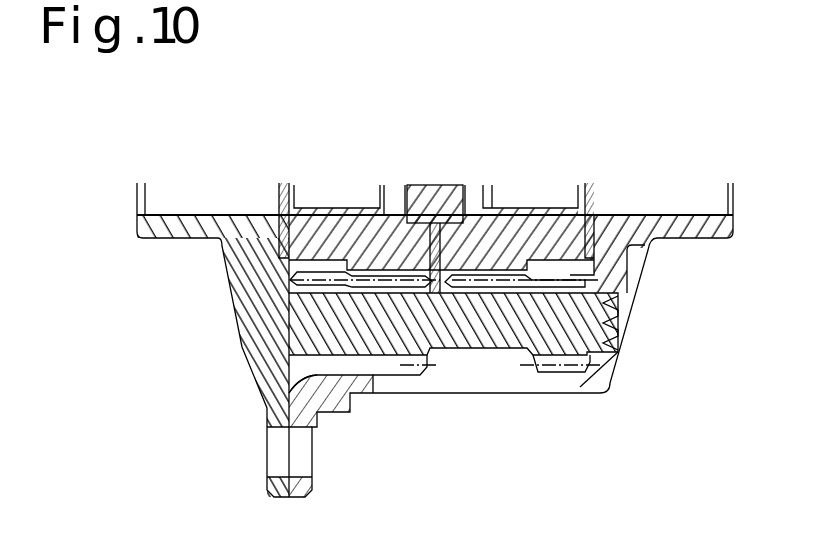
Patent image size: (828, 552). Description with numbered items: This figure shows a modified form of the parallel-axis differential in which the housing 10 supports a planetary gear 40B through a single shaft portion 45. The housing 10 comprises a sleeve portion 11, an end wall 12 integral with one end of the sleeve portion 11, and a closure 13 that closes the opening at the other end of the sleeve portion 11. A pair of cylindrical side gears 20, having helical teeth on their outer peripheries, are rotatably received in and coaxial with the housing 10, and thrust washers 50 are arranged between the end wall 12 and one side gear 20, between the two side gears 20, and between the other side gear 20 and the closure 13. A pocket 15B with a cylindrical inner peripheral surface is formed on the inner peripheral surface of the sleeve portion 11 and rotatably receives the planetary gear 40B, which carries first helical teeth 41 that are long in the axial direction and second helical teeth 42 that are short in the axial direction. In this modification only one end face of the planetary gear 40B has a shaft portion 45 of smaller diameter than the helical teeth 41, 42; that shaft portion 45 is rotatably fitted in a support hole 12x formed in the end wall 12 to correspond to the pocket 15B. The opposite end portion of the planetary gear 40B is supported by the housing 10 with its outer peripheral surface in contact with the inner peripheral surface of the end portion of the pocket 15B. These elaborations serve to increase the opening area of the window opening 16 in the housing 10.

The housing 10 is at (606, 403).
The sleeve portion 11 is at (330, 415).
The end wall 12 is at (618, 370).
The support hole 12x is at (620, 318).
The closure 13 is at (245, 340).
The pocket 15B is at (293, 390).
The window opening 16 is at (495, 375).
The side gear 20 is at (338, 227).
The planetary gear 40B is at (455, 358).
The first helical teeth 41 is at (357, 362).
The second helical teeth 42 is at (567, 370).
The shaft portion 45 is at (618, 345).
The thrust washer 50 is at (268, 222).